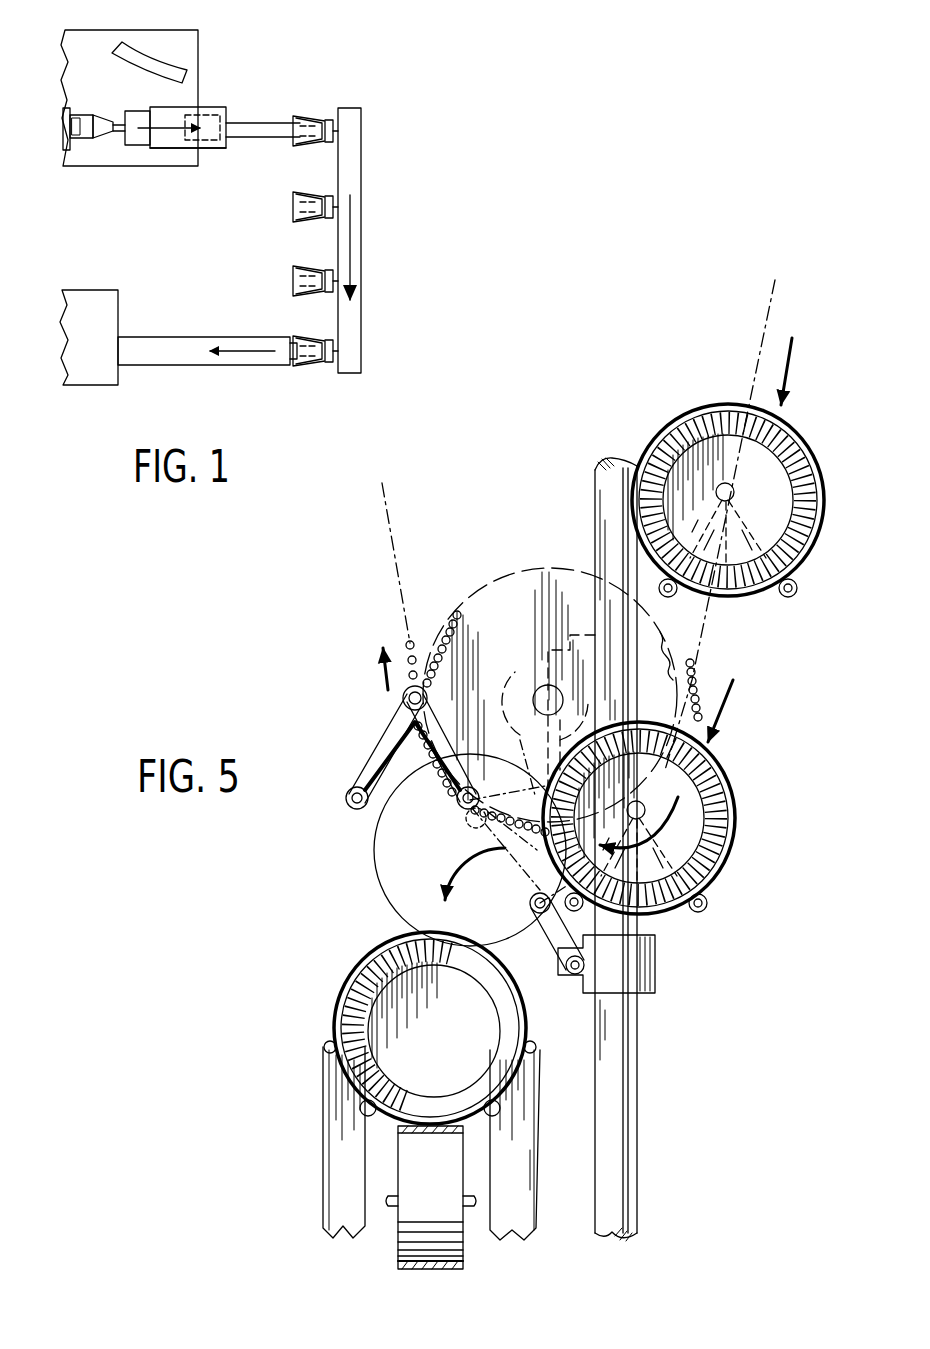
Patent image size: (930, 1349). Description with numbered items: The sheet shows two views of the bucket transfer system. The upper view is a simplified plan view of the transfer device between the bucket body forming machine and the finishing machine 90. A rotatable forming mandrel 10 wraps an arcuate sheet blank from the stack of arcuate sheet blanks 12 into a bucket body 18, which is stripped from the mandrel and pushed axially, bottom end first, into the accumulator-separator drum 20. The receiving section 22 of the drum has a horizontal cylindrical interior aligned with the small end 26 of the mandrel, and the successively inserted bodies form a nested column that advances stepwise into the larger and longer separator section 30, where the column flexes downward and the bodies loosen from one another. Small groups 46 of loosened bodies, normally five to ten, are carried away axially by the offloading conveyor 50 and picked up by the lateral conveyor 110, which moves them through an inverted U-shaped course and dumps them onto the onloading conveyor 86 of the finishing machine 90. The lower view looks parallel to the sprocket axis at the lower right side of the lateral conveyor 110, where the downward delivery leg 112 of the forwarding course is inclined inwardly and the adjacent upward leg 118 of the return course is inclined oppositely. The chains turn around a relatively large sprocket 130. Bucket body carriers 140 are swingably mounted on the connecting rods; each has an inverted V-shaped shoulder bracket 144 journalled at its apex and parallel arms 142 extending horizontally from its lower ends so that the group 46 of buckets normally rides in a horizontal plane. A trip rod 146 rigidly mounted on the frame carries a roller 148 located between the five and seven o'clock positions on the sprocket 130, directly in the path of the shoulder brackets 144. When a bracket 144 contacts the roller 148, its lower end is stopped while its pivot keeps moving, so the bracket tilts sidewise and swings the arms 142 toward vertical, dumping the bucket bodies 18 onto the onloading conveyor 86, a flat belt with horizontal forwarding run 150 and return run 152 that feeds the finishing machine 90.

In FIG. 1, the forming mandrel 10 is at (90, 112).
In FIG. 1, the arcuate sheet blanks 12 is at (160, 60).
In FIG. 1, the accumulator-separator drum 20 is at (162, 152).
In FIG. 1, the receiving section 22 is at (135, 110).
In FIG. 1, the small end 26 is at (116, 135).
In FIG. 1, the separator section 30 is at (178, 108).
In FIG. 1, the groups 46 is at (297, 270).
In FIG. 1, the offloading conveyor 50 is at (249, 118).
In FIG. 1, the onloading conveyor 86 is at (207, 368).
In FIG. 5, the onloading conveyor 86 is at (438, 1270).
In FIG. 1, the finishing machine 90 is at (100, 386).
In FIG. 1, the lateral conveyor 110 is at (368, 255).
In FIG. 5, the downward delivery leg 112 is at (762, 318).
In FIG. 5, the upward leg 118 is at (385, 531).
In FIG. 5, the sprocket 130 is at (476, 588).
In FIG. 5, the bucket body carriers 140 is at (372, 757).
In FIG. 5, the parallel arms 142 is at (783, 596).
In FIG. 5, the shoulder bracket 144 is at (797, 555).
In FIG. 5, the trip rod 146 is at (536, 905).
In FIG. 5, the roller 148 is at (538, 898).
In FIG. 5, the bucket body 18 is at (360, 1008).
In FIG. 5, the forwarding run 150 is at (436, 1131).
In FIG. 5, the return run 152 is at (420, 1257).